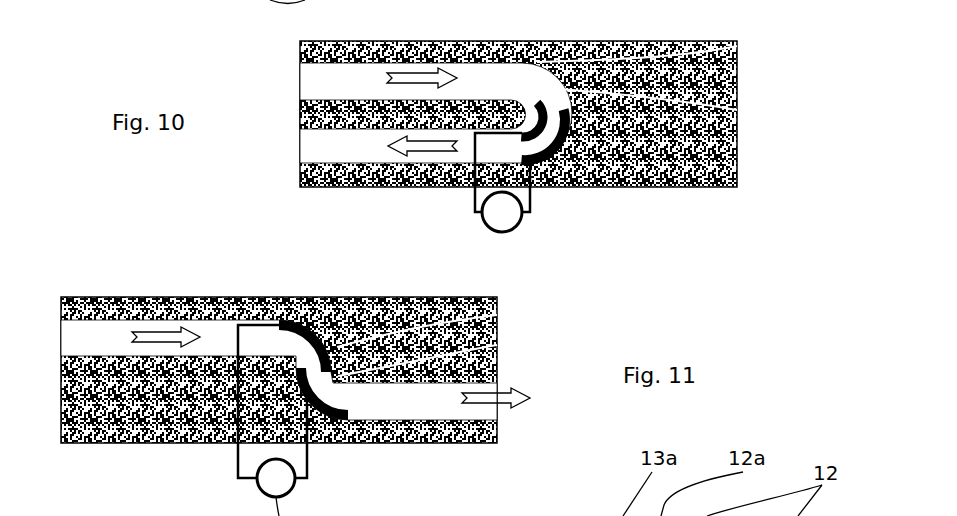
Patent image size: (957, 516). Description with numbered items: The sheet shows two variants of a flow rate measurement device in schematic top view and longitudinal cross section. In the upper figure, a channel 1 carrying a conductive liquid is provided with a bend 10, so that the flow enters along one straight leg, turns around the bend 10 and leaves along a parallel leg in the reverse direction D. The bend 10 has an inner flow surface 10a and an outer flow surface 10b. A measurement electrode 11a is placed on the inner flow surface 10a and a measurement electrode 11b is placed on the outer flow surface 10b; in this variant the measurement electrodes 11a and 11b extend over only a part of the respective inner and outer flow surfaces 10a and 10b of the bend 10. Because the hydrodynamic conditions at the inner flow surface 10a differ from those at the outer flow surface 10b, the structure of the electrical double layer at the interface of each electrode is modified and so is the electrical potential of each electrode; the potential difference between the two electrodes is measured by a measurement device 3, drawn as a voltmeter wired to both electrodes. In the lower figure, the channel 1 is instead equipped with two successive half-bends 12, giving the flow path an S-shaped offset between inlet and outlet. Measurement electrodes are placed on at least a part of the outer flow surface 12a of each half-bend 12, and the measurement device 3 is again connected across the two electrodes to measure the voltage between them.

In FIG. 10, the channel 1 is at (305, 82).
In FIG. 11, the channel 1 is at (102, 343).
In FIG. 10, the measurement device 3 is at (501, 233).
In FIG. 11, the measurement device 3 is at (305, 515).
In FIG. 10, the bend 10 is at (538, 93).
In FIG. 10, the inner flow surface 10a is at (512, 108).
In FIG. 11, the inner flow surface 10a is at (335, 342).
In FIG. 10, the outer flow surface 10b is at (551, 154).
In FIG. 11, the outer flow surface 10b is at (350, 402).
In FIG. 10, the measurement electrode 11a is at (513, 122).
In FIG. 10, the measurement electrode 11b is at (737, 110).
In FIG. 11, the half-bend 12 is at (344, 370).
In FIG. 11, the outer flow surface 12a is at (497, 315).
In FIG. 10, the flow direction D is at (440, 152).
In FIG. 11, the flow direction D is at (177, 330).